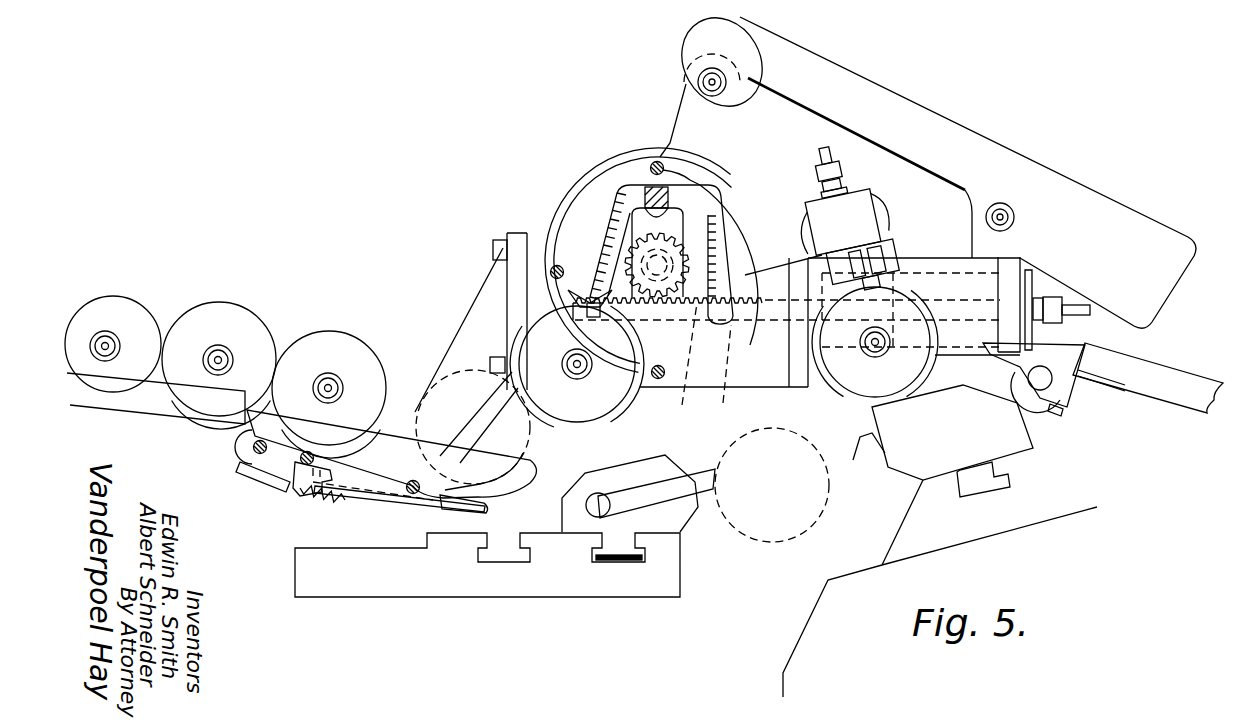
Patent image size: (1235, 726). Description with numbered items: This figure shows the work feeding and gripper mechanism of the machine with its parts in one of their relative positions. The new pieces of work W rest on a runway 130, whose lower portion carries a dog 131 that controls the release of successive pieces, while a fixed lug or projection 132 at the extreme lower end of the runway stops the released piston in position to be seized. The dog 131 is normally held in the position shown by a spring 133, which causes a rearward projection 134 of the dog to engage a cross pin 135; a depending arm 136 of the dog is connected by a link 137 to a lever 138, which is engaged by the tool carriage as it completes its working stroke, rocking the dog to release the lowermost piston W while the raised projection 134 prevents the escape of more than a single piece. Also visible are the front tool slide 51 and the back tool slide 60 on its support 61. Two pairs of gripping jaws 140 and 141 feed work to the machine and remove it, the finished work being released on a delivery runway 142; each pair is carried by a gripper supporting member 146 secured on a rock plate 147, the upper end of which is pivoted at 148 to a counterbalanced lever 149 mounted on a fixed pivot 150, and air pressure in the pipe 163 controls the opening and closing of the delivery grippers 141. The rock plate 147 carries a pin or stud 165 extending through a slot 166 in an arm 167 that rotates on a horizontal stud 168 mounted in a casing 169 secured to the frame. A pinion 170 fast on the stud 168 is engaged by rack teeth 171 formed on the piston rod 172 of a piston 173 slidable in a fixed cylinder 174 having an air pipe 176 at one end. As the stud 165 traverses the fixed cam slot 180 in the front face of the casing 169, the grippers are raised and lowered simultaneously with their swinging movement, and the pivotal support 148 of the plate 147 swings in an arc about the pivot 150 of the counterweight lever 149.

The front tool slide 51 is at (414, 592).
The back tool slide 60 is at (959, 540).
The support 61 is at (822, 601).
The runway 130 is at (122, 405).
The dog 131 is at (377, 420).
The fixed lug or projection 132 is at (520, 474).
The spring 133 is at (341, 500).
The rearward projection 134 is at (240, 448).
The cross pin 135 is at (256, 470).
The depending arm 136 is at (292, 492).
The link 137 is at (432, 509).
The lever 138 is at (482, 511).
The gripping jaws 140 is at (640, 343).
The gripping jaws 141 is at (812, 349).
The delivery runway 142 is at (1162, 371).
The gripper supporting member 146 is at (838, 238).
The rock plate 147 is at (719, 160).
The pivot 148 is at (698, 82).
The counterbalanced lever 149 is at (920, 100).
The fixed pivot 150 is at (985, 217).
The pipe 163 is at (838, 155).
The pin or stud 165 is at (652, 187).
The slot 166 is at (672, 220).
The arm 167 is at (627, 243).
The horizontal stud 168 is at (630, 267).
The casing 169 is at (600, 167).
The pinion 170 is at (643, 257).
The rack teeth 171 is at (672, 364).
The piston rod 172 is at (721, 375).
The piston 173 is at (920, 291).
The cylinder 174 is at (910, 264).
The air pipe 176 is at (1077, 310).
The fixed cam slot 180 is at (617, 210).
The work W is at (205, 311).